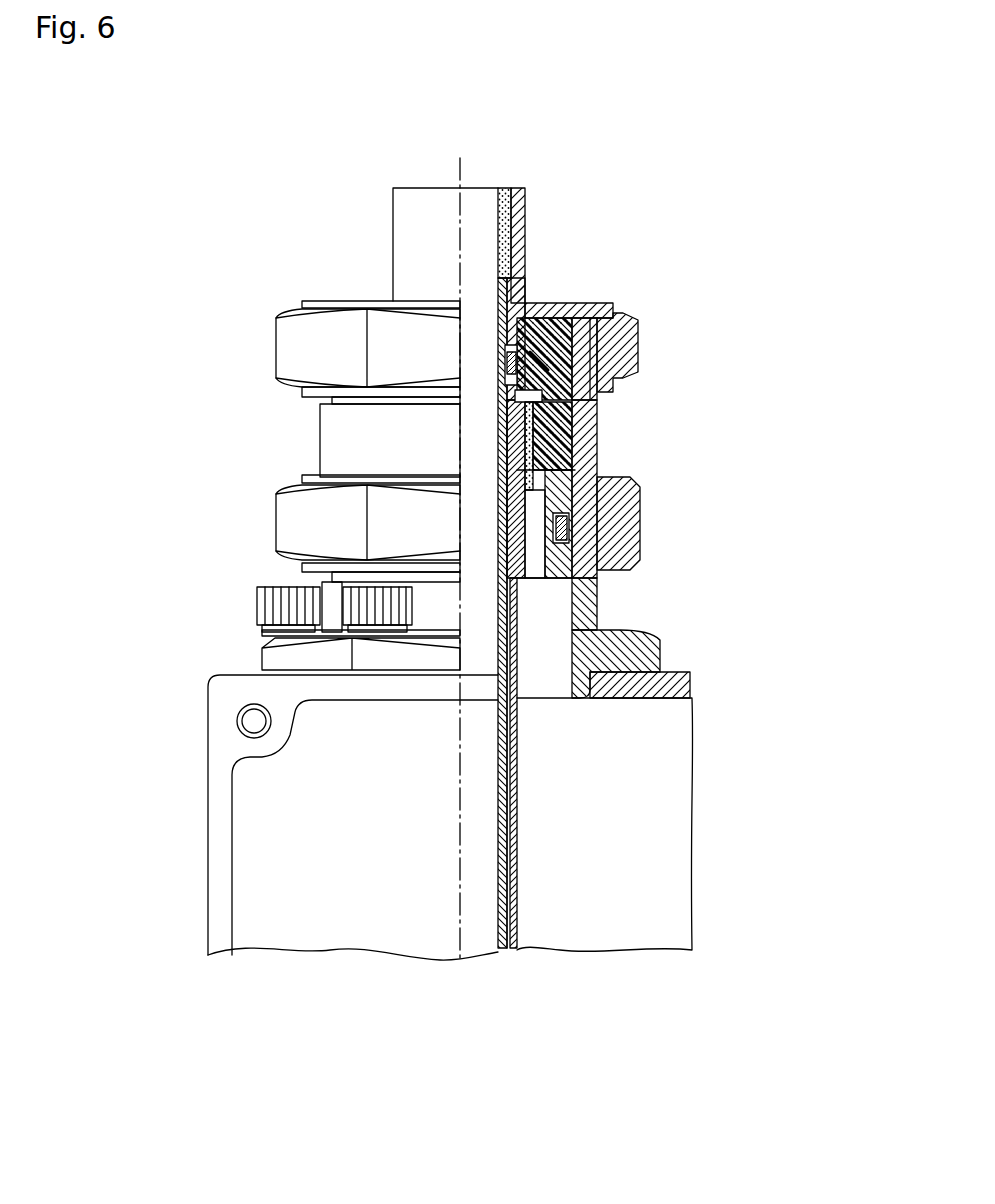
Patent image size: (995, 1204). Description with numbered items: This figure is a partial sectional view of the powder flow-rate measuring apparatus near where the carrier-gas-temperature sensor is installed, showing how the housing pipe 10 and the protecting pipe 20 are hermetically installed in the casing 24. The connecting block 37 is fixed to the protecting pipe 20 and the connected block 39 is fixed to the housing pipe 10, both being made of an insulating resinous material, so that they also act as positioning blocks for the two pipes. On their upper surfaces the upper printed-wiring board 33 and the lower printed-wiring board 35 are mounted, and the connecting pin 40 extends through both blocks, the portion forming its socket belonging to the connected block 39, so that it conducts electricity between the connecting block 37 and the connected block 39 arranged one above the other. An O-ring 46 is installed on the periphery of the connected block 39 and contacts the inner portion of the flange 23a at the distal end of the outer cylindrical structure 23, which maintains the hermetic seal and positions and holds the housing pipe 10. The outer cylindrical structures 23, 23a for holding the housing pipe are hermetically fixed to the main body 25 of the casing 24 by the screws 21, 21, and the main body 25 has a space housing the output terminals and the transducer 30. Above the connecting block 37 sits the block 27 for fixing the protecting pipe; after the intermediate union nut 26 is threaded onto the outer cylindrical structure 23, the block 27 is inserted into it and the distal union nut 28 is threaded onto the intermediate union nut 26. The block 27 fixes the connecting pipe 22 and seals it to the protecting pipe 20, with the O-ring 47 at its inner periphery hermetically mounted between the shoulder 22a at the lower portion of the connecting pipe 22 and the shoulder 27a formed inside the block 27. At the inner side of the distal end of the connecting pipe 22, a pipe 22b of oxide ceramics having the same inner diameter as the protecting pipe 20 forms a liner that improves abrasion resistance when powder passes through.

The housing pipe 10 is at (515, 895).
The protecting pipe 20 is at (498, 838).
The screws 21 is at (287, 592).
The connecting pipe 22 is at (527, 190).
The shoulder 22a is at (545, 332).
The pipe 22b is at (507, 190).
The outer cylindrical structure 23 is at (650, 652).
The flange 23a is at (600, 482).
The casing 24 is at (718, 673).
The main body 25 is at (680, 683).
The intermediate union nut 26 is at (640, 545).
The block for fixing the protecting pipe 27 is at (560, 342).
The shoulder 27a is at (500, 382).
The distal union nut 28 is at (640, 348).
The transducer 30 is at (602, 794).
The upper printed-wiring board 33 is at (640, 372).
The lower printed-wiring board 35 is at (600, 511).
The connecting block 37 is at (600, 454).
The connected block 39 is at (600, 598).
The connecting pin 40 is at (595, 424).
The O-ring 46 is at (605, 540).
The O-ring 47 is at (537, 363).